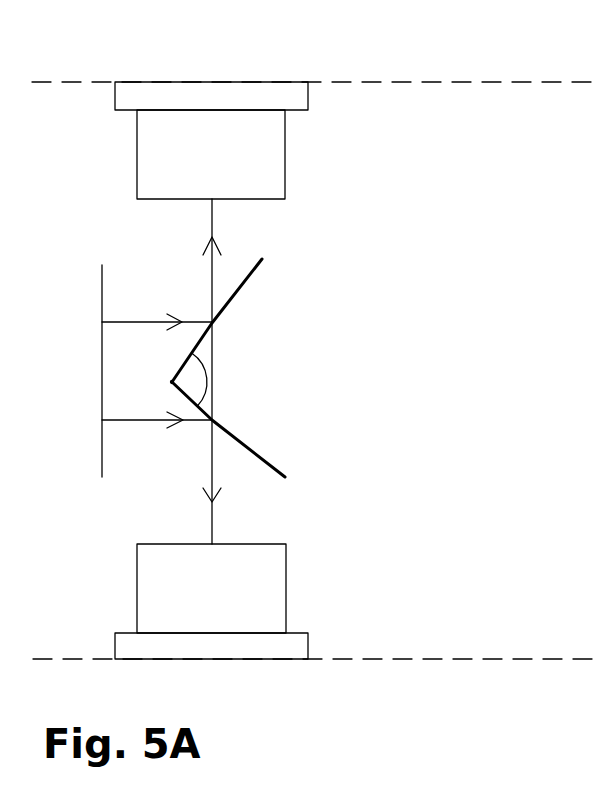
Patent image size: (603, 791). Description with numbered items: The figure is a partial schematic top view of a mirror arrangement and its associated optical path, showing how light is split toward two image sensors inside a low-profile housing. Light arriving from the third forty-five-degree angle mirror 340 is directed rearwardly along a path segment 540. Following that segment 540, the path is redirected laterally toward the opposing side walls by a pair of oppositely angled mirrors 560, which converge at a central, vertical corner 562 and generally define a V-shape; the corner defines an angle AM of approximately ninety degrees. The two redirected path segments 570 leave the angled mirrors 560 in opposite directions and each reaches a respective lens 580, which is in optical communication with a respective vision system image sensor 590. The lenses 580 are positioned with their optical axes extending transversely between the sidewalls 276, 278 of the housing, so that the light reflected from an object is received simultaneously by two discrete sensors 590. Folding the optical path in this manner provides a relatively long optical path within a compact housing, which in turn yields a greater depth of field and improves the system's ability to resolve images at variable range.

The sidewall 276 is at (453, 82).
The sidewall 278 is at (493, 660).
The third 45-degree angle mirror 340 is at (102, 372).
The path segment 540 is at (157, 374).
The oppositely angled mirrors 560 is at (256, 368).
The corner 562 is at (241, 394).
The redirected path segments 570 is at (249, 371).
The lens 580 is at (249, 371).
The vision system image sensor 590 is at (210, 82).
The angle AM is at (250, 377).